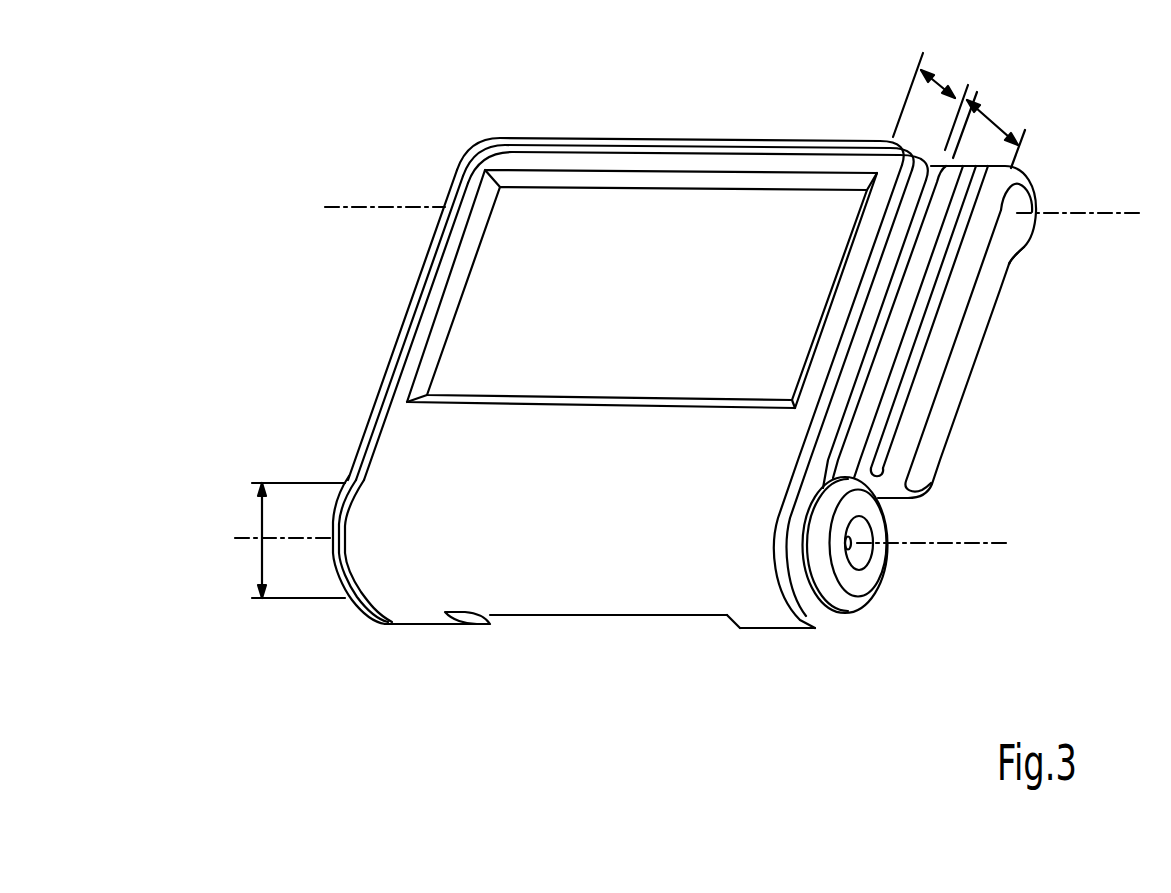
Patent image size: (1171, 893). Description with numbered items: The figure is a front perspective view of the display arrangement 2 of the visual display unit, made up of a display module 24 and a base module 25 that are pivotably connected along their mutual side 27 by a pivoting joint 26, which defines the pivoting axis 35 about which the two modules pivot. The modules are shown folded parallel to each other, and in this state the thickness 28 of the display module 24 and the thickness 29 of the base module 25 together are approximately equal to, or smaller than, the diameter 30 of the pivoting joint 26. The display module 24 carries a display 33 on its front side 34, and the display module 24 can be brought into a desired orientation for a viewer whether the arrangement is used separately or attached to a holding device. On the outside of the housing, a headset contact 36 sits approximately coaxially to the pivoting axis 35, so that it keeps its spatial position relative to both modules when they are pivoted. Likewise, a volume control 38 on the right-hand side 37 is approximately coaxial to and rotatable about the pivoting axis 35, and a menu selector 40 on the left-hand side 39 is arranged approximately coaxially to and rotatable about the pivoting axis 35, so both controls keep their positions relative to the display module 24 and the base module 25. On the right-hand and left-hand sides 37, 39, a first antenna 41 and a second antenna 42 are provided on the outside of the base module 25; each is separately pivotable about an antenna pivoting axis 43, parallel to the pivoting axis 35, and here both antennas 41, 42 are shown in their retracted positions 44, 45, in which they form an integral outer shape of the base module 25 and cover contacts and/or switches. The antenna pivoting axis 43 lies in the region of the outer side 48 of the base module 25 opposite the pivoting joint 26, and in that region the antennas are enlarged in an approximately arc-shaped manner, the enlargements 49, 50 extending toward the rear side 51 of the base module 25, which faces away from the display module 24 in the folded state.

The display arrangement 2 is at (258, 655).
The display module 24 is at (372, 390).
The base module 25 is at (960, 445).
The pivoting joint 26 is at (828, 648).
The mutual side 27 is at (672, 658).
The thickness of the display module 28 is at (940, 84).
The thickness of the base module 29 is at (995, 122).
The diameter of the pivoting joint 30 is at (260, 515).
The display 33 is at (502, 325).
The front side 34 is at (540, 460).
The pivoting axis 35 is at (244, 540).
The headset contact 36 is at (330, 562).
The right-hand side 37 is at (770, 648).
The volume control 38 is at (850, 601).
The left-hand side 39 is at (390, 648).
The menu selector 40 is at (337, 491).
The first antenna 41 is at (975, 326).
The second antenna 42 is at (412, 283).
The antenna pivoting axis 43 is at (389, 207).
The retracted position of the first antenna 44 is at (978, 375).
The retracted position of the second antenna 45 is at (385, 358).
The outer side 48 is at (758, 130).
The enlargement of the first antenna 49 is at (1032, 253).
The enlargement of the second antenna 50 is at (428, 243).
The rear side 51 is at (938, 487).